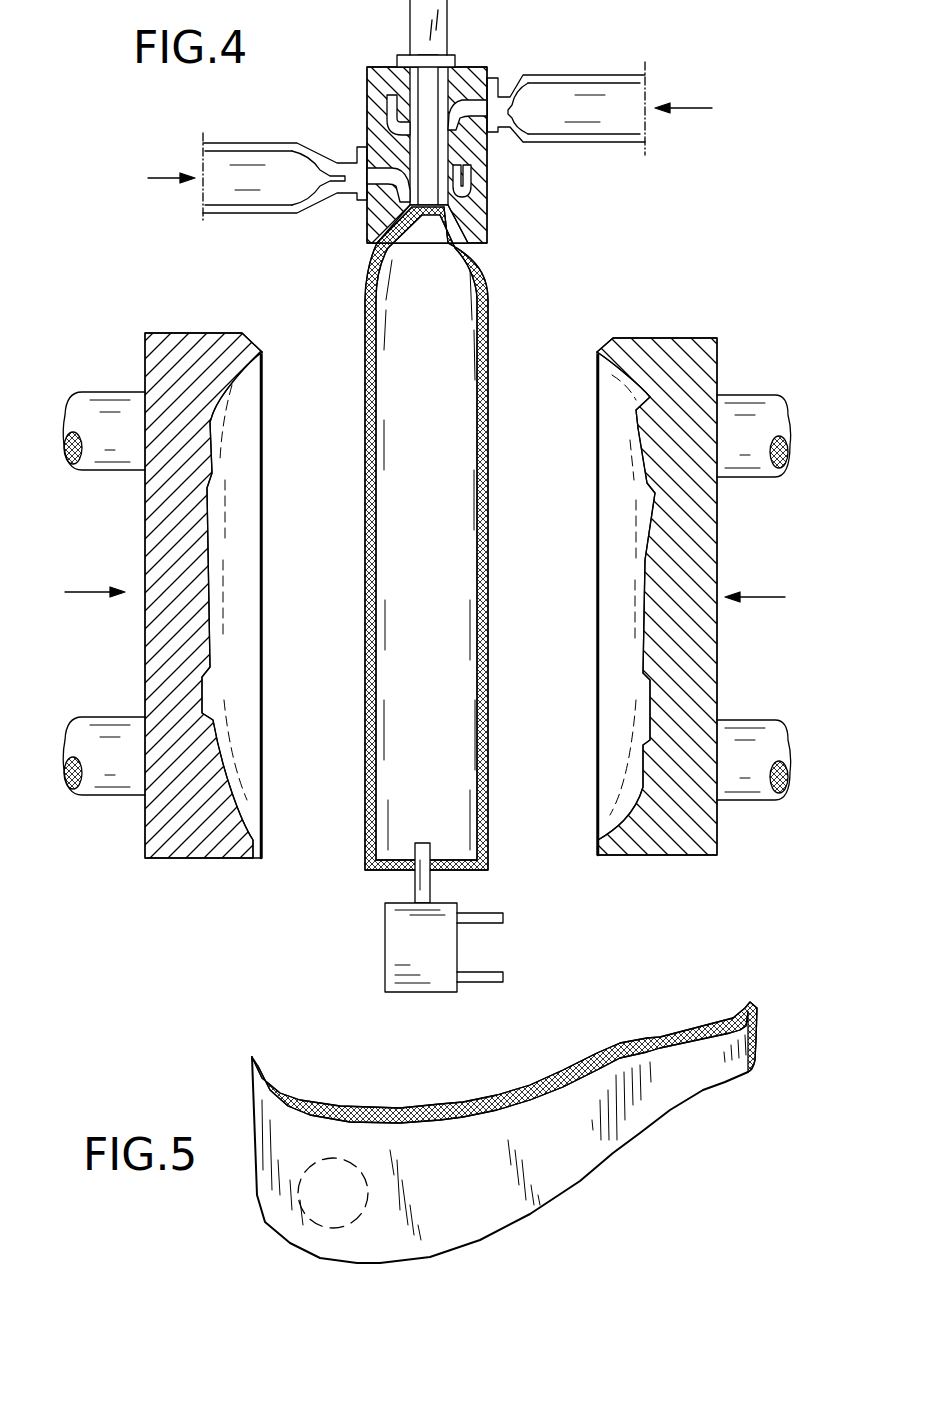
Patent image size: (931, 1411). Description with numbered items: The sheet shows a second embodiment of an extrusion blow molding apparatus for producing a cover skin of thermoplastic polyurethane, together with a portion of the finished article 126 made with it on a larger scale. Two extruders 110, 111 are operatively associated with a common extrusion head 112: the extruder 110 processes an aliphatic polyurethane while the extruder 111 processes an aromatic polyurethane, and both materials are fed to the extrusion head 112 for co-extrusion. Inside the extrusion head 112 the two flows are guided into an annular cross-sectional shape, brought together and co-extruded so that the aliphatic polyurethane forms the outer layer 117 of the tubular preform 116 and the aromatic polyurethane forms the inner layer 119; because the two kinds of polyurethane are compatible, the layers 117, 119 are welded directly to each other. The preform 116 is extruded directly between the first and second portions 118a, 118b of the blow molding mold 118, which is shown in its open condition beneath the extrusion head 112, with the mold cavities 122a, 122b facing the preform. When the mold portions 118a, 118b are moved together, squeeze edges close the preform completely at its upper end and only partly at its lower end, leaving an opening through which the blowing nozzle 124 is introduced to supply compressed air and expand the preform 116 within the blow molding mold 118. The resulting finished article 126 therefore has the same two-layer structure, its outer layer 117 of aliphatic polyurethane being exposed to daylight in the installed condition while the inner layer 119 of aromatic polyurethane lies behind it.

In FIG. 4, the extruder 110 is at (253, 200).
In FIG. 4, the extruder 111 is at (616, 85).
In FIG. 4, the extrusion head 112 is at (482, 207).
In FIG. 4, the preform 116 is at (472, 538).
In FIG. 4, the outer layer 117 is at (487, 650).
In FIG. 5, the outer layer 117 is at (745, 1040).
In FIG. 4, the blow molding mold 118 is at (426, 598).
In FIG. 4, the first portion of blow molding mold 118a is at (204, 634).
In FIG. 4, the second portion of blow molding mold 118b is at (654, 637).
In FIG. 4, the inner layer 119 is at (472, 584).
In FIG. 5, the inner layer 119 is at (283, 1088).
In FIG. 4, the left mold cavity 122a is at (243, 542).
In FIG. 4, the right mold cavity 122b is at (613, 535).
In FIG. 4, the blowing nozzle 124 is at (413, 880).
In FIG. 5, the finished article 126 is at (498, 1150).